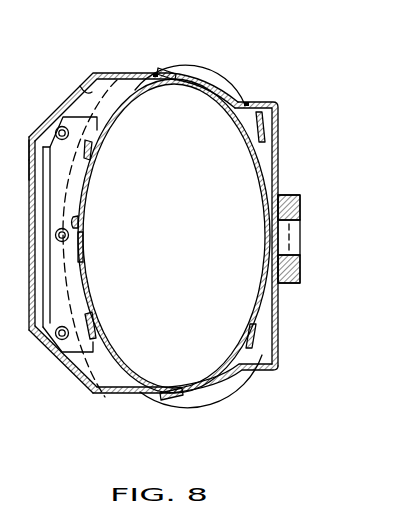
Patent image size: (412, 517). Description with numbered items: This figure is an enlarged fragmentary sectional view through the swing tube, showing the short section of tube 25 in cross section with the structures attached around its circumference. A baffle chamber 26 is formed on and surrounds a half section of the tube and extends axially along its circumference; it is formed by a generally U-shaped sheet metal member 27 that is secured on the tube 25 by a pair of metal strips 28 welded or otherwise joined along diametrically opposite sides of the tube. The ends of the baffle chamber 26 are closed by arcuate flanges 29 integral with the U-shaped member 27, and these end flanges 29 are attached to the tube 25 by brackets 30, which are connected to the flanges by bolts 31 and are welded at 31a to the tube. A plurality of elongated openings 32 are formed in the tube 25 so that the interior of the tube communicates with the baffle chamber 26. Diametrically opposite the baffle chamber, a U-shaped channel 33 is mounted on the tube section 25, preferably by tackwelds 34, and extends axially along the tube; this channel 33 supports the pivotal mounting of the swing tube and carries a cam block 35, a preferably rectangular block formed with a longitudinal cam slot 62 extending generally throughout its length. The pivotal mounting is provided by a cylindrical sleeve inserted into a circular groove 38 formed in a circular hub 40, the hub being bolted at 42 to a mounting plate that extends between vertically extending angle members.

The tube 25 is at (223, 98).
The baffle chamber 26 is at (93, 74).
The U-shaped sheet metal member 27 is at (62, 357).
The metal strips 28 is at (177, 72).
The arcuate flanges 29 is at (93, 394).
The brackets 30 is at (53, 308).
The bolts 31 is at (64, 328).
The weld 31a is at (80, 217).
The elongated openings 32 is at (91, 167).
The U-shaped channel 33 is at (277, 134).
The tackwelds 34 is at (233, 373).
The cam block 35 is at (295, 195).
The circular groove 38 is at (0, 128).
The circular hub 40 is at (25, 233).
The bolts 42 is at (0, 88).
The cam slot 62 is at (292, 252).